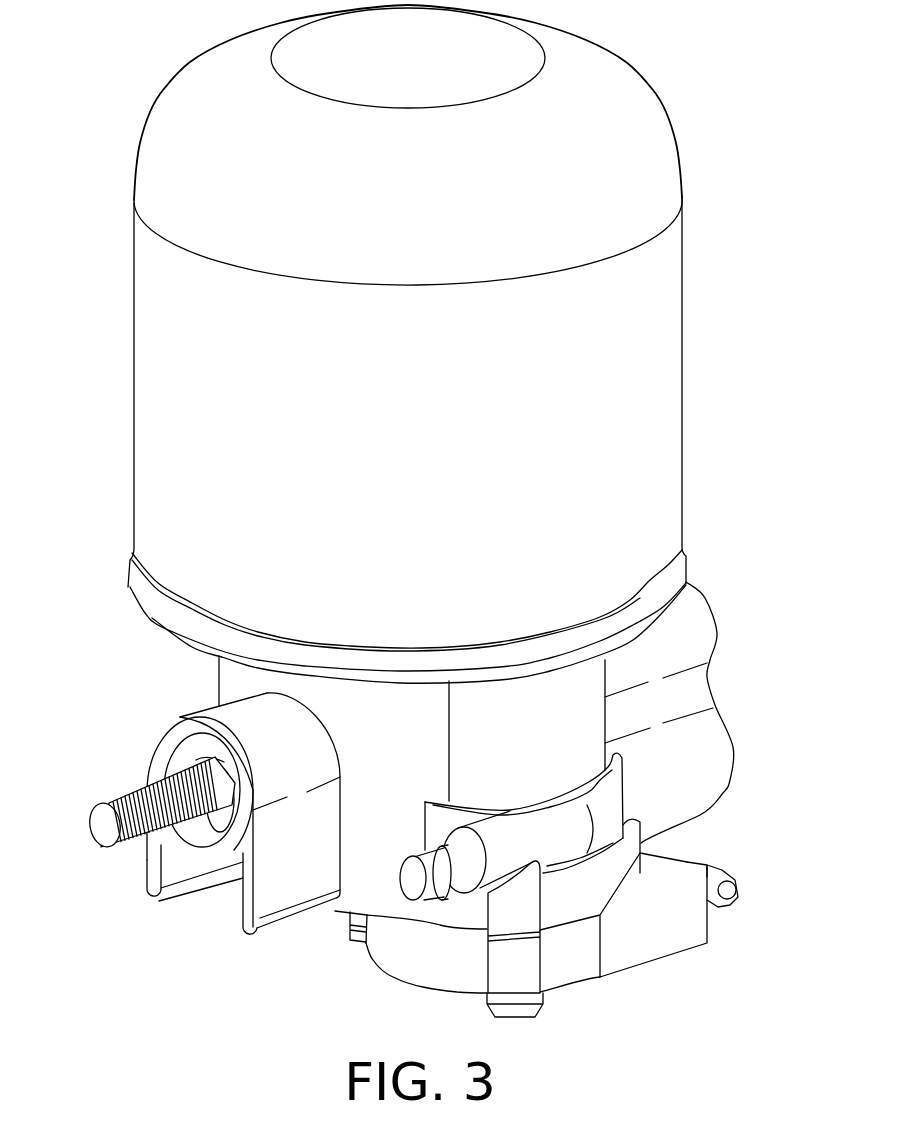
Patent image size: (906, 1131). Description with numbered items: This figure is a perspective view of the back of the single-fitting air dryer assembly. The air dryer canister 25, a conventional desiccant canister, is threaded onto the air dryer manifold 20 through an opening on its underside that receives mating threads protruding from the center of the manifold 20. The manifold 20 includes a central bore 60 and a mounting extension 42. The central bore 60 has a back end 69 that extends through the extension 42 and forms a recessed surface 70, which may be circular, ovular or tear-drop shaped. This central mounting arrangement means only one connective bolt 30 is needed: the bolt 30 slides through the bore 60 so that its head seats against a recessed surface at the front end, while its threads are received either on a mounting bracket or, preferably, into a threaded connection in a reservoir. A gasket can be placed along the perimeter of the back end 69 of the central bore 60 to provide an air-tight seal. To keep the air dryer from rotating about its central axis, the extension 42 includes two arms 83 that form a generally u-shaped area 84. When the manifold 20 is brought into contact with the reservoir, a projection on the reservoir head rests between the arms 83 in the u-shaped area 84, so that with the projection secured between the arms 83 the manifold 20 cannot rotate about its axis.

The air dryer canister 25 is at (150, 358).
The air dryer manifold 20 is at (715, 772).
The mounting extension 42 is at (307, 757).
The recessed surface 70 is at (182, 762).
The central bore 60 is at (220, 818).
The back end 69 is at (197, 757).
The bolt 30 is at (97, 832).
The arms 83 is at (152, 898).
The u-shaped area 84 is at (203, 918).